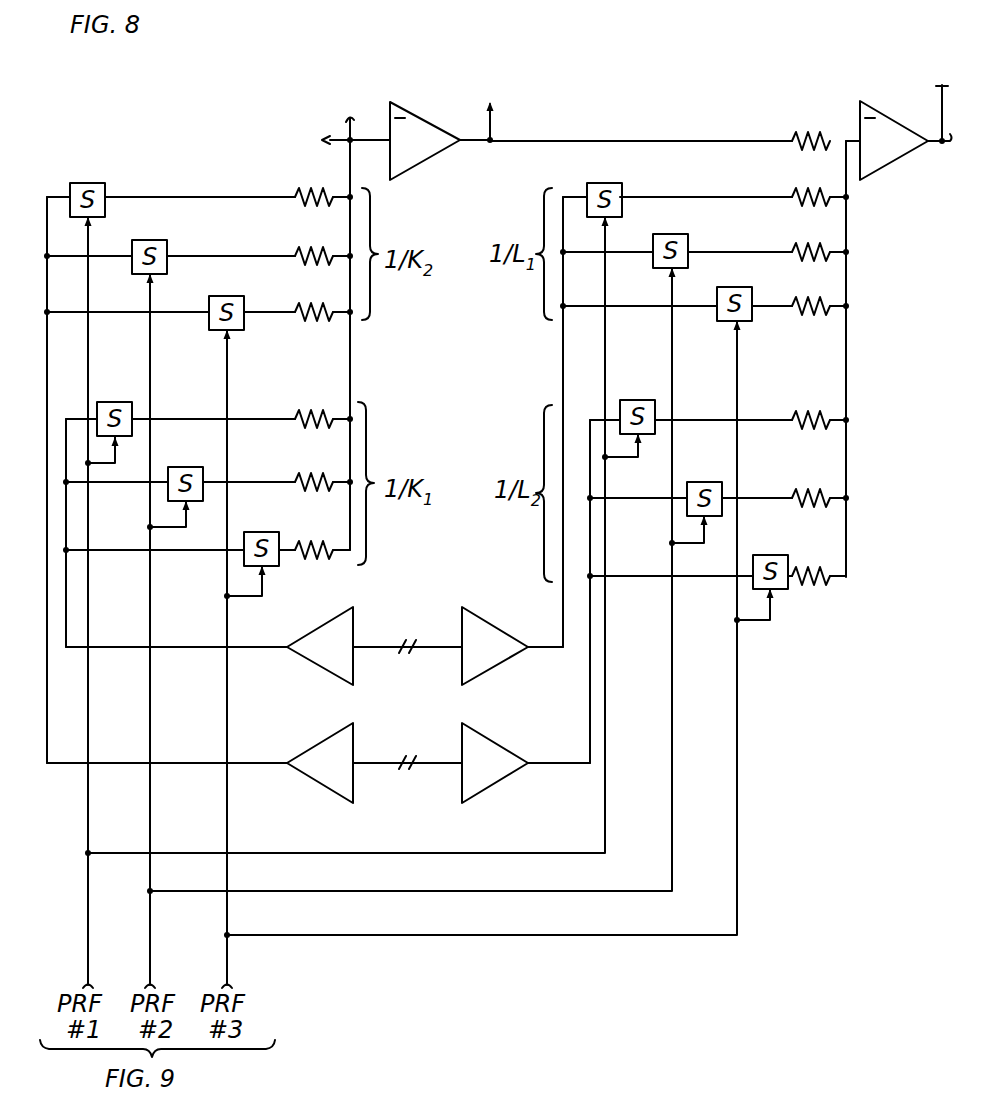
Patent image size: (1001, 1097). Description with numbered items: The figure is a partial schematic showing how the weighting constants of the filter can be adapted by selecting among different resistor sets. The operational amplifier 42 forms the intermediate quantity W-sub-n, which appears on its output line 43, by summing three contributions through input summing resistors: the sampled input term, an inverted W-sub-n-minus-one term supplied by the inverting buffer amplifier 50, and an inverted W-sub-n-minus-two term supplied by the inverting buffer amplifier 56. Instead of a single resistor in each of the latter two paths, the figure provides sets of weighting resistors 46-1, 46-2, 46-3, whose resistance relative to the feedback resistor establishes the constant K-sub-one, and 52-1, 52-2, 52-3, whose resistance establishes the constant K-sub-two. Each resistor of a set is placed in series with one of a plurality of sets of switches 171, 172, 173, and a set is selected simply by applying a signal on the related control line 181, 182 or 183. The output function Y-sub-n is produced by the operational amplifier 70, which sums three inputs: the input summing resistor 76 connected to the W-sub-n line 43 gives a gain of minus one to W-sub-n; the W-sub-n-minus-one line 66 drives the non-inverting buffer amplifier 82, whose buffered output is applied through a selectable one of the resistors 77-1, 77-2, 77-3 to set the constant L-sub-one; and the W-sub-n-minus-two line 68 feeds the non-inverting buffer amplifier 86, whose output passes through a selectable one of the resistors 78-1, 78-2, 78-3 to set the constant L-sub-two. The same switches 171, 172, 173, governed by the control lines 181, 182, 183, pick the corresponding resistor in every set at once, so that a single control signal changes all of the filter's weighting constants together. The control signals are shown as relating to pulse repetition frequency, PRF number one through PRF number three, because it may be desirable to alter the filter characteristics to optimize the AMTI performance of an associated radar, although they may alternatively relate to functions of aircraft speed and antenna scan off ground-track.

The operational amplifier 42 is at (421, 124).
The output line 43 is at (586, 141).
The input summing resistor 46-1 is at (330, 410).
The input summing resistor 46-2 is at (330, 462).
The input summing resistor 46-3 is at (330, 542).
The inverting buffer amplifier 50 is at (355, 616).
The input summing resistor 52-1 is at (328, 189).
The input summing resistor 52-2 is at (328, 248).
The input summing resistor 52-3 is at (328, 304).
The inverting buffer amplifier 56 is at (323, 741).
The W-sub-n-minus-one line 66 is at (438, 642).
The W-sub-n-minus-two line 68 is at (378, 764).
The operational amplifier 70 is at (887, 167).
The input summing resistor 76 is at (806, 131).
The input summing resistor 77-1 is at (806, 189).
The input summing resistor 77-2 is at (820, 244).
The input summing resistor 77-3 is at (820, 298).
The input summing resistor 78-1 is at (816, 411).
The input summing resistor 78-2 is at (818, 489).
The input summing resistor 78-3 is at (826, 567).
The non-inverting buffer amplifier 82 is at (494, 626).
The non-inverting buffer amplifier 86 is at (495, 742).
The switch 171 is at (107, 183).
The switch 172 is at (165, 240).
The switch 173 is at (230, 296).
The control line 181 is at (328, 853).
The control line 182 is at (420, 891).
The control line 183 is at (487, 935).